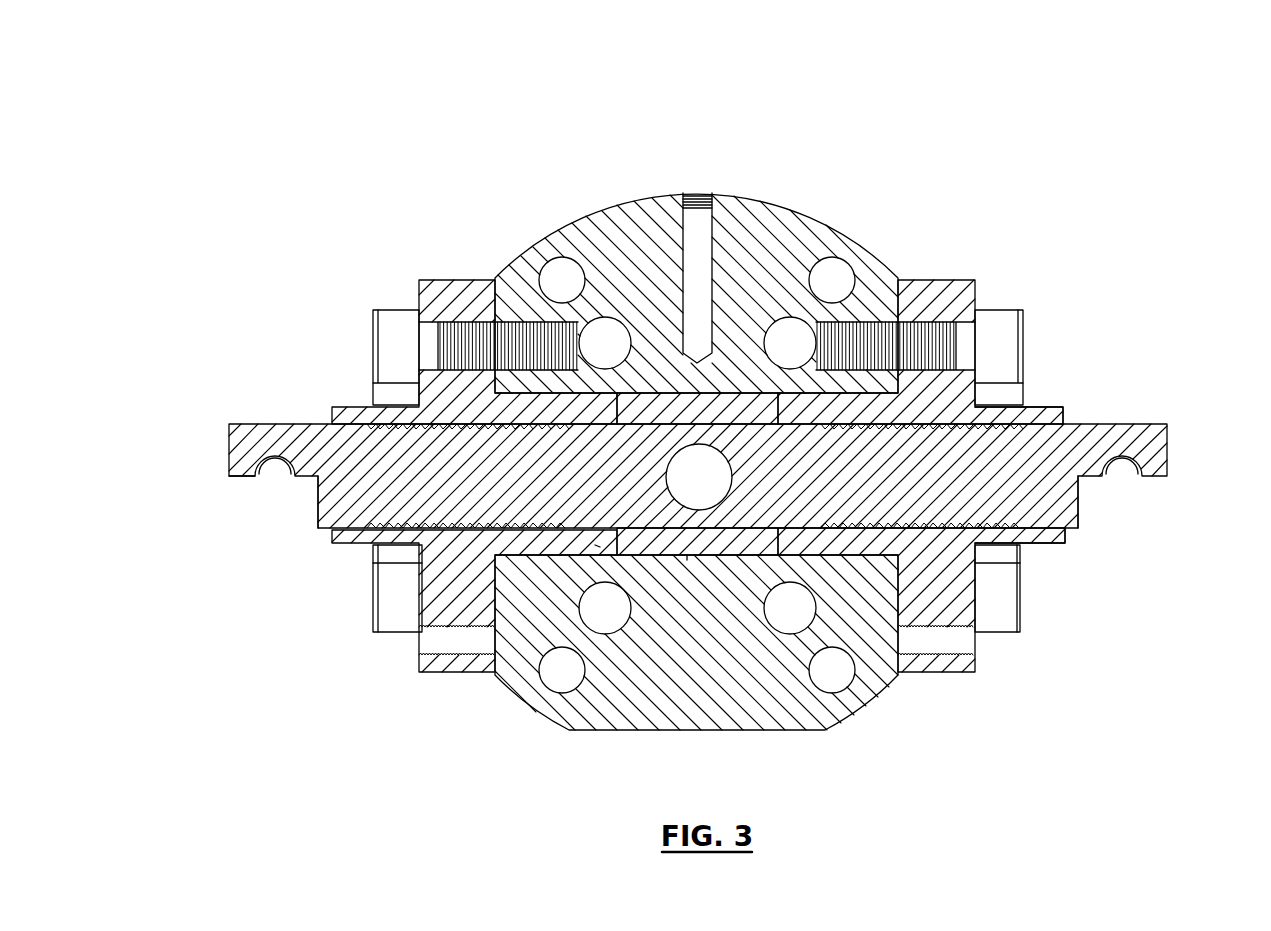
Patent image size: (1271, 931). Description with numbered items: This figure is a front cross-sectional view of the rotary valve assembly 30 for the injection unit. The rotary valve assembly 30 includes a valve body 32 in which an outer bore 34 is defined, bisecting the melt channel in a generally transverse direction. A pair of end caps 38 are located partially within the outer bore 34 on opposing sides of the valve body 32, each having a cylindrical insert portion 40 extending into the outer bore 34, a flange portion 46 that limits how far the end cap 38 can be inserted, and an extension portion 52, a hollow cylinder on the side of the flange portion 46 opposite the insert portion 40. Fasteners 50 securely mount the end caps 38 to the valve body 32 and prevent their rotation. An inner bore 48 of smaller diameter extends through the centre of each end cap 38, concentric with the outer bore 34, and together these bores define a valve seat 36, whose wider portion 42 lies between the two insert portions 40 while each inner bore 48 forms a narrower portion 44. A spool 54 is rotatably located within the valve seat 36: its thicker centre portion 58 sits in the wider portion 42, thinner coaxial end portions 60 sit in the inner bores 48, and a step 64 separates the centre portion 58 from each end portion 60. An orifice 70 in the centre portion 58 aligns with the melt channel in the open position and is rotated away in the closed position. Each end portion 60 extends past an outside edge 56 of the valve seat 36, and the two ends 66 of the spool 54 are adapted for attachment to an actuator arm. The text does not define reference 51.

The rotary valve assembly 30 is at (275, 135).
The valve body 32 is at (709, 446).
The outer bore 34 is at (1201, 400).
The valve seat 36 is at (347, 86).
The end cap 38 is at (455, 280).
The cylindrical insert portion 40 is at (889, 552).
The wider portion 42 is at (778, 144).
The narrower portion 44 is at (334, 191).
The flange portion 46 is at (980, 670).
The inner bore 48 is at (189, 425).
The fastener 50 is at (1020, 340).
The threaded bore 51 is at (903, 580).
The extension portion 52 is at (1063, 407).
The spool 54 is at (1080, 505).
The outside edge 56 is at (1068, 545).
The centre portion 58 is at (687, 555).
The end portion 60 is at (317, 513).
The step 64 is at (595, 545).
The end 66 is at (238, 478).
The orifice 70 is at (687, 491).